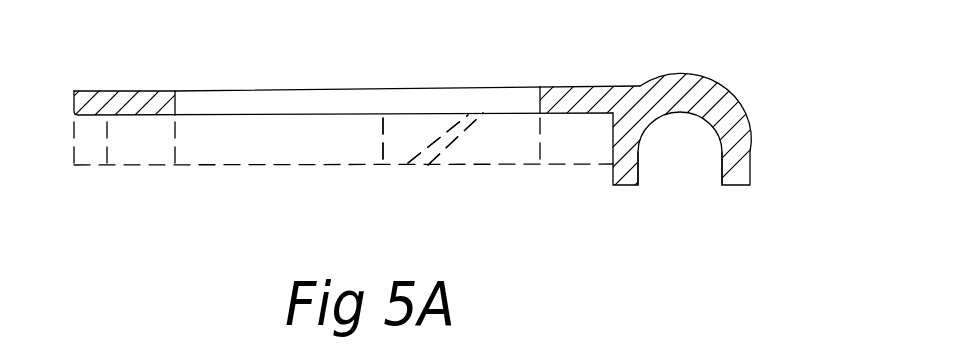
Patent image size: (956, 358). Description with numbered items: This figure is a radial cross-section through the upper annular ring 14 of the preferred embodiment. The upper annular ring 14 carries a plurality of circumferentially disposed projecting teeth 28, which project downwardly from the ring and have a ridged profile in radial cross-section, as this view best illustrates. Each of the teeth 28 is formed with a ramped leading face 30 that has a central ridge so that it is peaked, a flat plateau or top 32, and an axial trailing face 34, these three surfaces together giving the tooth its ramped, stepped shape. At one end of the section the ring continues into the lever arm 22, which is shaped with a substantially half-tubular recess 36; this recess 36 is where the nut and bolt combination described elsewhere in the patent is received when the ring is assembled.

The upper annular ring 14 is at (770, 84).
The lever arm 22 is at (742, 192).
The projecting teeth 28 is at (411, 130).
The ramped leading face 30 is at (458, 132).
The flat plateau or top 32 is at (409, 162).
The axial trailing face 34 is at (383, 130).
The half-tubular recess 36 is at (675, 166).